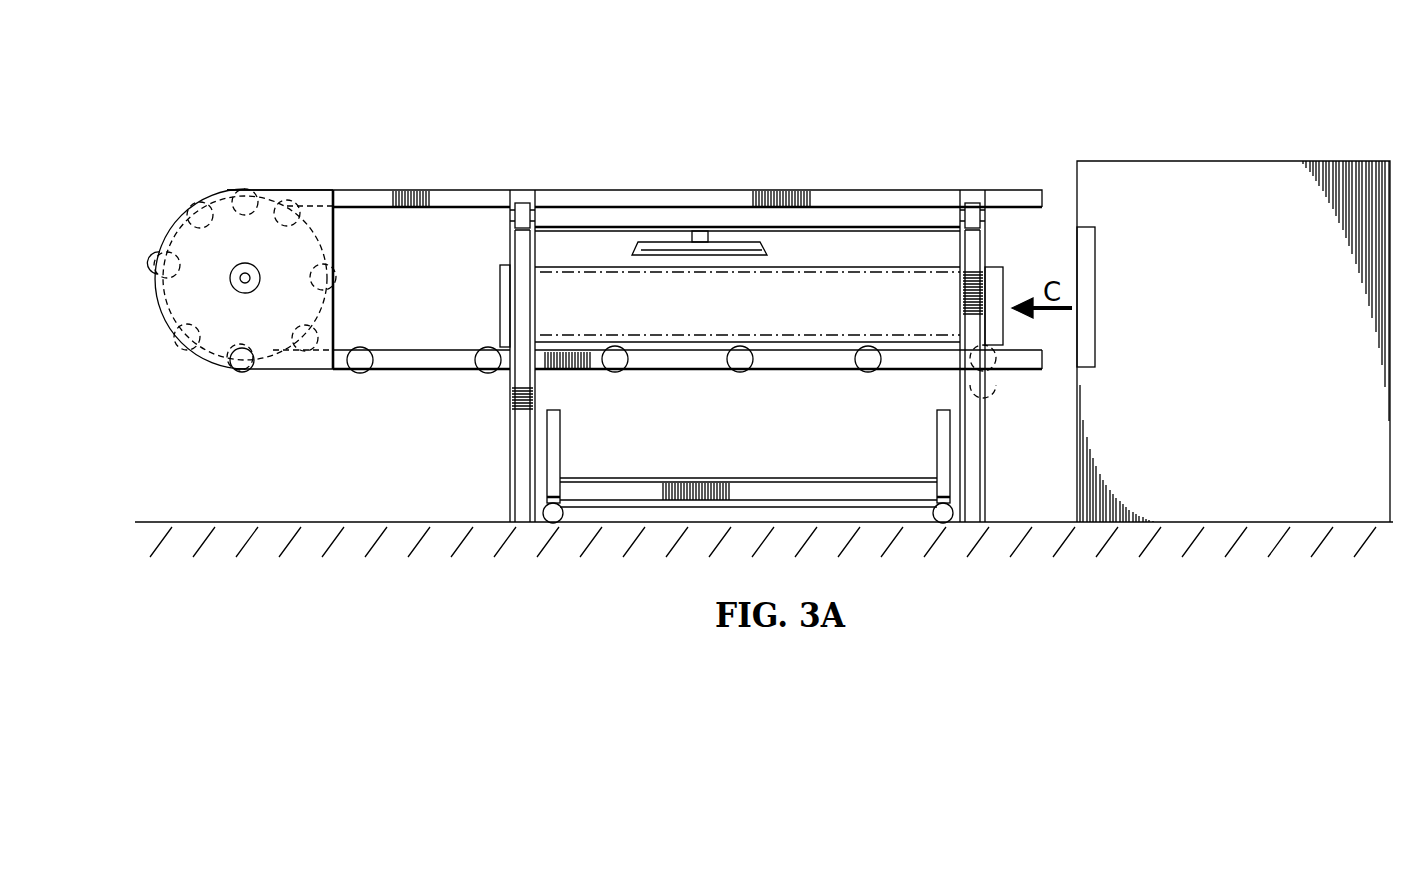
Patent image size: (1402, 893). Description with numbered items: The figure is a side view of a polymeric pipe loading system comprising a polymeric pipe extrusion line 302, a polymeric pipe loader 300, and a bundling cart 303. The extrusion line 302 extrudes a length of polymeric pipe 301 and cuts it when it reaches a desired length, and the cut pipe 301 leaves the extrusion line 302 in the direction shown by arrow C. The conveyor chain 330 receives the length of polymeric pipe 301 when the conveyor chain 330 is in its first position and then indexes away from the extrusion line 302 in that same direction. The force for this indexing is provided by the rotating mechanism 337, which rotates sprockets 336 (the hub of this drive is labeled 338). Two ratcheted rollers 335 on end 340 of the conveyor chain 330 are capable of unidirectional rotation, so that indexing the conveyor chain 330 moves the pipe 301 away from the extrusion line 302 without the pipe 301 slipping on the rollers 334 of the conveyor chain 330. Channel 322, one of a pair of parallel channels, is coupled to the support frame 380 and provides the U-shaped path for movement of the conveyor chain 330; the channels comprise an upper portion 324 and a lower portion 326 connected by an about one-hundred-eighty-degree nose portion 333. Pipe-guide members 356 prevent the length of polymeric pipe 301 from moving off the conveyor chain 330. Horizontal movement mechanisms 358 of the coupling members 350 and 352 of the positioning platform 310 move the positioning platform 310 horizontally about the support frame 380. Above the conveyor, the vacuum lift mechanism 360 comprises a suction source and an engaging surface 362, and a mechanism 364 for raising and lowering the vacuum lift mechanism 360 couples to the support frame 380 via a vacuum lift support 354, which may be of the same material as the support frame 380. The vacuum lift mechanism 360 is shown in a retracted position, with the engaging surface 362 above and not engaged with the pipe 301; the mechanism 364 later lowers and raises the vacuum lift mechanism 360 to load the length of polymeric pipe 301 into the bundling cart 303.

The polymeric pipe loader 300 is at (426, 53).
The length of polymeric pipe 301 is at (672, 322).
The polymeric pipe extrusion line 302 is at (1215, 356).
The bundling cart 303 is at (746, 480).
The positioning platform 310 is at (634, 190).
The channel 322 is at (397, 375).
The upper portion 324 is at (365, 197).
The lower portion 326 is at (415, 350).
The conveyor chain 330 is at (460, 373).
The nose portion 333 is at (192, 353).
The rollers 334 is at (490, 345).
The ratcheted rollers 335 is at (864, 346).
The sprockets 336 is at (283, 198).
The rotating mechanism 337 is at (243, 262).
The shaft 338 is at (243, 292).
The end 340 is at (915, 373).
The coupling member 350 is at (503, 215).
The coupling member 352 is at (990, 218).
The vacuum lift support 354 is at (580, 208).
The pipe-guide members 356 is at (505, 250).
The horizontal movement mechanisms 358 is at (525, 202).
The vacuum lift mechanism 360 is at (767, 247).
The engaging surface 362 is at (735, 257).
The mechanism for raising and lowering 364 is at (700, 230).
The support frame 380 is at (828, 197).